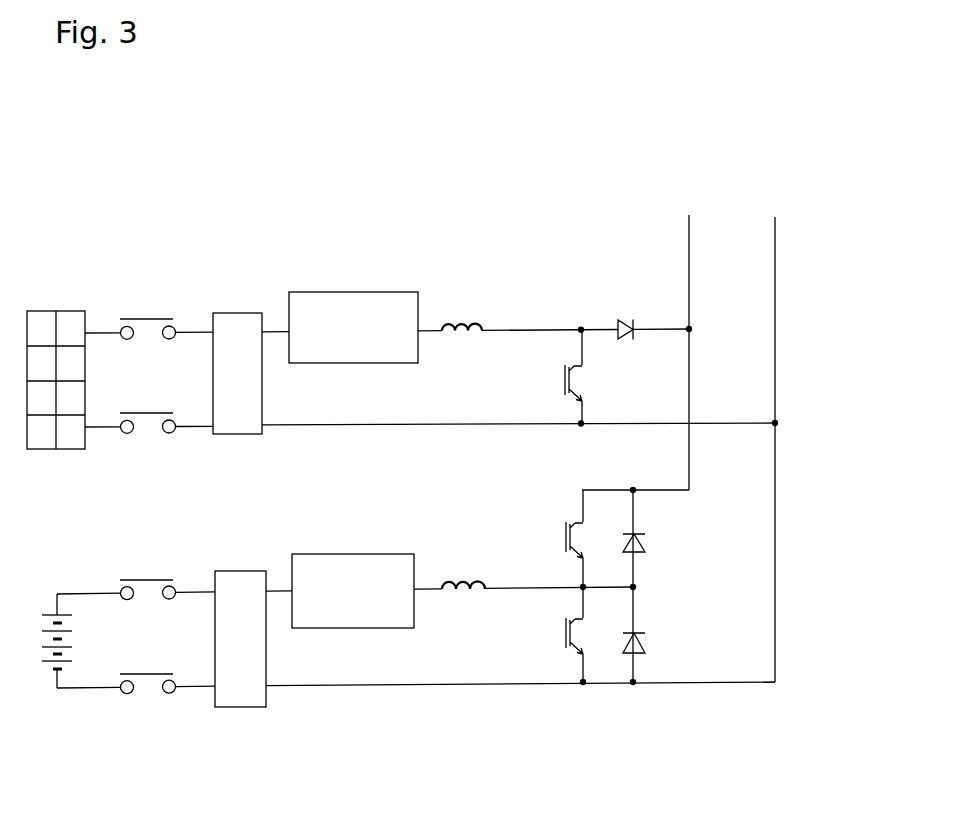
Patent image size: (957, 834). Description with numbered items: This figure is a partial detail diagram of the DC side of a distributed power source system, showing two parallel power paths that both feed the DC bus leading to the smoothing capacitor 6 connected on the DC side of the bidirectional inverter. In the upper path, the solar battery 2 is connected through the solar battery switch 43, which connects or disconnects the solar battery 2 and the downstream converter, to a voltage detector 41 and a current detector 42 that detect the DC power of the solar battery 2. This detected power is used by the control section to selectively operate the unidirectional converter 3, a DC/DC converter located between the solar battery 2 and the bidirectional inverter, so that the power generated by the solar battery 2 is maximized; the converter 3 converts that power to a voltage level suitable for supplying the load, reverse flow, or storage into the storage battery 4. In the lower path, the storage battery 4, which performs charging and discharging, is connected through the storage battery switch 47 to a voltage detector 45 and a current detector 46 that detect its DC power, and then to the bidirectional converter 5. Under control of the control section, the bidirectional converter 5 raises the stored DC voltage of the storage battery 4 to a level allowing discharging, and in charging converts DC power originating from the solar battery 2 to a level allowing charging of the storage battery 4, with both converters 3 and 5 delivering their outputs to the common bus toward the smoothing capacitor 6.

The solar battery 2 is at (50, 312).
The unidirectional converter 3 is at (608, 298).
The storage battery 4 is at (44, 606).
The bidirectional converter 5 is at (619, 718).
The smoothing capacitor 6 is at (705, 415).
The voltage detector 41 is at (235, 312).
The current detector 42 is at (350, 292).
The solar battery switch 43 is at (143, 307).
The voltage detector 45 is at (237, 708).
The current detector 46 is at (352, 554).
The storage battery switch 47 is at (148, 562).